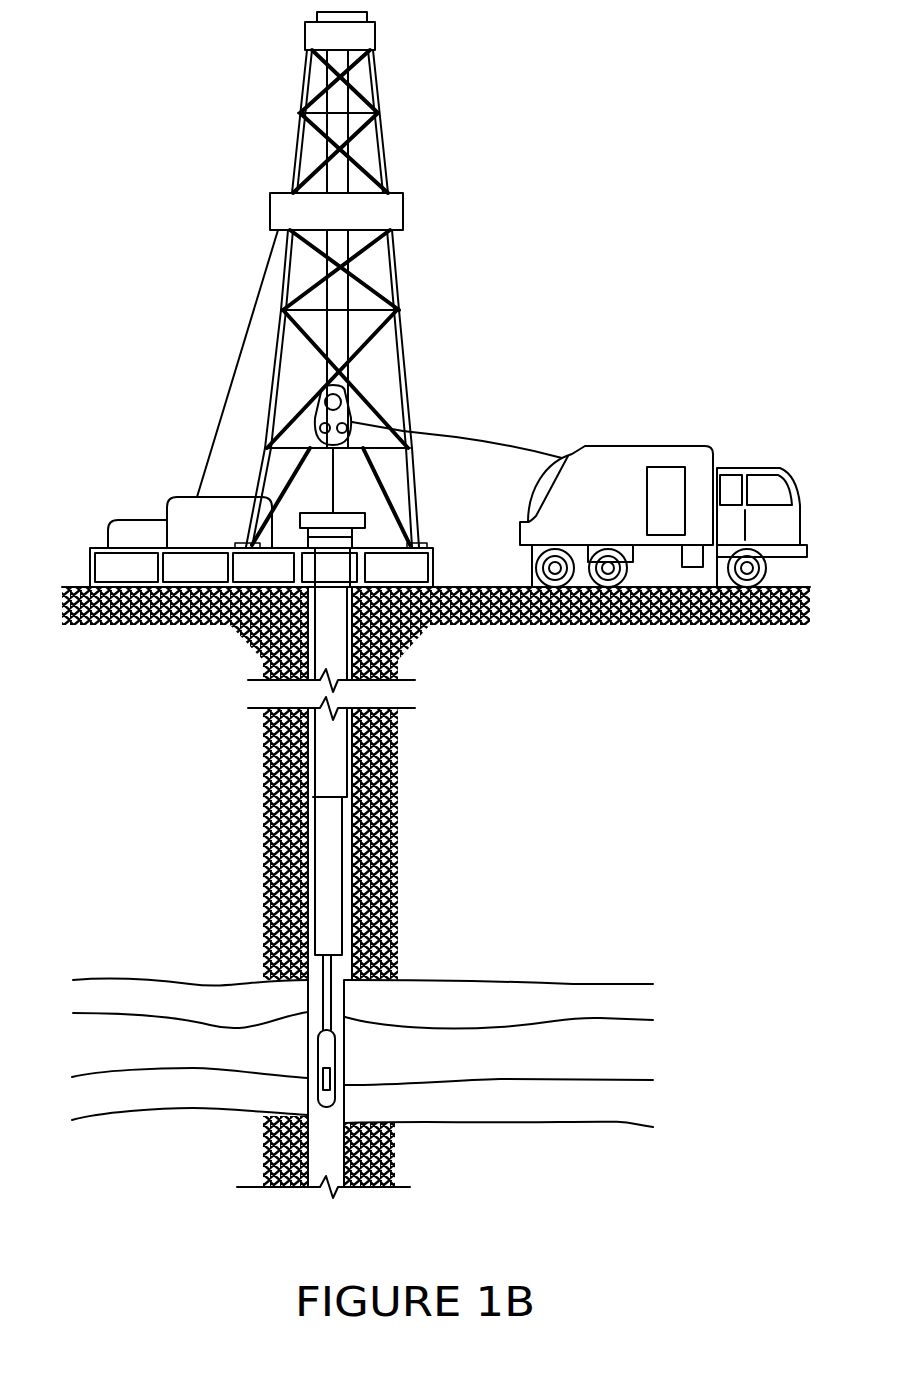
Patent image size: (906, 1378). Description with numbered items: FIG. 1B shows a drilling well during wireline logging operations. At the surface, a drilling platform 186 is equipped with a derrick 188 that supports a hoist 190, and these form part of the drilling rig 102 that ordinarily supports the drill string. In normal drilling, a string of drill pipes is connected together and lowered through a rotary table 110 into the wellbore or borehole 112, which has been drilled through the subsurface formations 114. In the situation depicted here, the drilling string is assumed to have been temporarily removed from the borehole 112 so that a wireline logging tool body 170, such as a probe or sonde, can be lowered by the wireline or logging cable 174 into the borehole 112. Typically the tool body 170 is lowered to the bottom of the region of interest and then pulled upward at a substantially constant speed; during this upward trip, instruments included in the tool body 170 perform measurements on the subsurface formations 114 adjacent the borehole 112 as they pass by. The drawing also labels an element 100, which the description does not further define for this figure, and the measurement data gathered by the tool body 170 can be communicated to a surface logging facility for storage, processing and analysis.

The sensor / logging instrument 100 is at (333, 1068).
The drilling rig 102 is at (628, 443).
The rotary table 110 is at (360, 516).
The borehole 112 is at (307, 993).
The subsurface formations 114 is at (665, 975).
The wireline logging tool body 170 is at (340, 1045).
The logging cable 174 is at (456, 437).
The drilling platform 186 is at (433, 580).
The derrick 188 is at (418, 540).
The hoist 190 is at (345, 393).